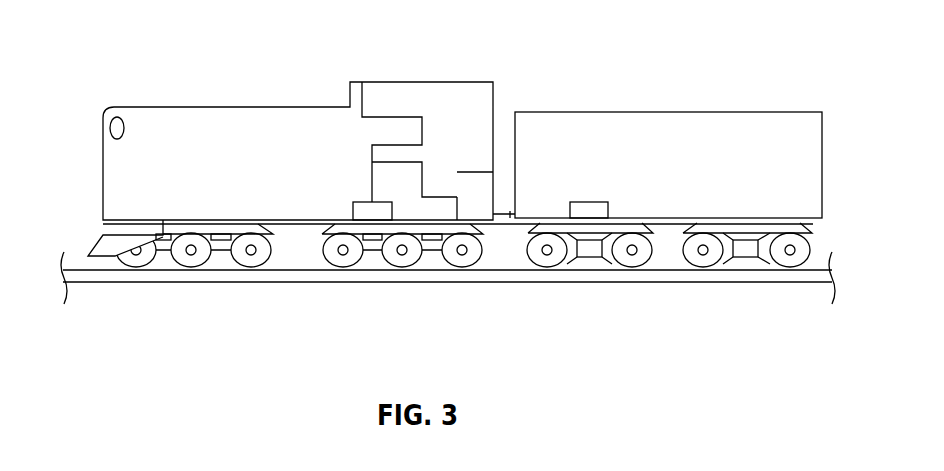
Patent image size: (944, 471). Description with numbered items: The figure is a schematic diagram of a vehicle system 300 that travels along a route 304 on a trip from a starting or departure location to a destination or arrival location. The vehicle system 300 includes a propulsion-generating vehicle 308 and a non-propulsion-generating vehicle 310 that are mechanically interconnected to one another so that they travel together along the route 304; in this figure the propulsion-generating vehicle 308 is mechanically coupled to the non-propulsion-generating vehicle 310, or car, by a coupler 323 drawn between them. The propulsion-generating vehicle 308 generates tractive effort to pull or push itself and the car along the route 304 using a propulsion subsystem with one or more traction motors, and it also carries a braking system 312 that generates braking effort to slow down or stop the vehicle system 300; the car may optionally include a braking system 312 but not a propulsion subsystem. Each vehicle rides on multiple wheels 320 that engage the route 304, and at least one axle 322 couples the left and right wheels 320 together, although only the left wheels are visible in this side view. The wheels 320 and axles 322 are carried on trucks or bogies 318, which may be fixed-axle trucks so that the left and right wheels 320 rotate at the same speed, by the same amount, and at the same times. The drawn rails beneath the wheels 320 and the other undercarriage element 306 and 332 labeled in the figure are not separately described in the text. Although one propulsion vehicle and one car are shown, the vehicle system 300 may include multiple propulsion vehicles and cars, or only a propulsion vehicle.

The vehicle system 300 is at (243, 66).
The route 304 is at (108, 290).
The rail 306 is at (217, 271).
The propulsion-generating vehicle 308 is at (212, 107).
The non-propulsion-generating vehicle 310 is at (742, 178).
The braking system 312 is at (352, 212).
The truck or bogie 318 is at (430, 226).
The wheel 320 is at (321, 253).
The axle 322 is at (343, 250).
The coupler 323 is at (517, 216).
The drive unit 332 is at (484, 206).